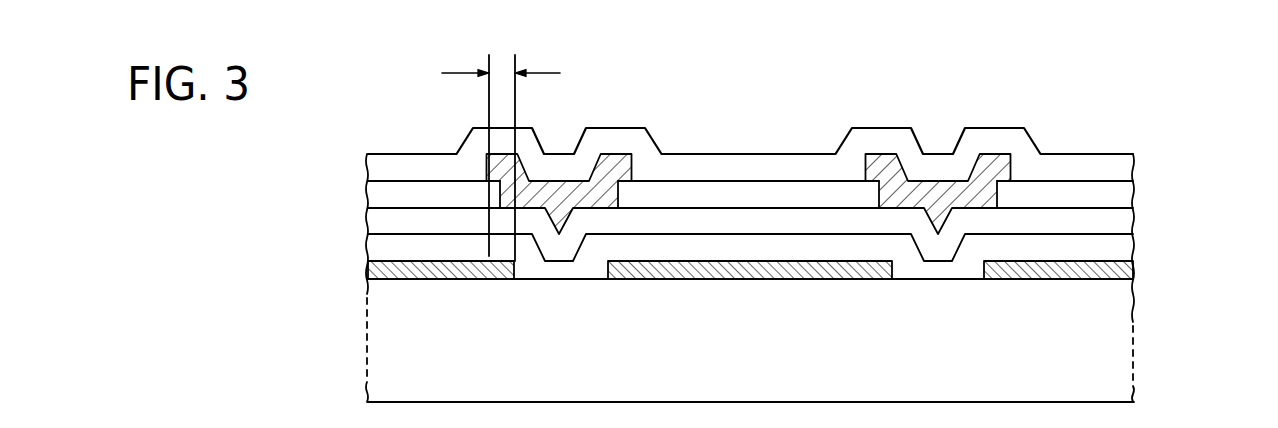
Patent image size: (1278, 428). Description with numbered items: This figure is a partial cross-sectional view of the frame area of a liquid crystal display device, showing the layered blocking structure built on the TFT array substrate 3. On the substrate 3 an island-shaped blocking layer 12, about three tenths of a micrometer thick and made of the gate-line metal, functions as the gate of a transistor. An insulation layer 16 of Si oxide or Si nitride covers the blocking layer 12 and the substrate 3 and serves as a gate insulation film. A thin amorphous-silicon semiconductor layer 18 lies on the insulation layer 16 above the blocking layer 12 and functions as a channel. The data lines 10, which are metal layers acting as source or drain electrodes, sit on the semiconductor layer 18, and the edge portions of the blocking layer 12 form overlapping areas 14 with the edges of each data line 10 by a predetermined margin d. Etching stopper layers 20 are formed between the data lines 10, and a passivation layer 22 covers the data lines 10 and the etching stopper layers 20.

The TFT array substrate 3 is at (833, 372).
The data lines 10 is at (612, 163).
The blocking layer 12 is at (447, 270).
The overlapping areas 14 is at (501, 60).
The insulation layer 16 is at (1118, 250).
The semiconductor layer 18 is at (1118, 223).
The etching stopper layers 20 is at (382, 193).
The passivation layer 22 is at (1118, 170).